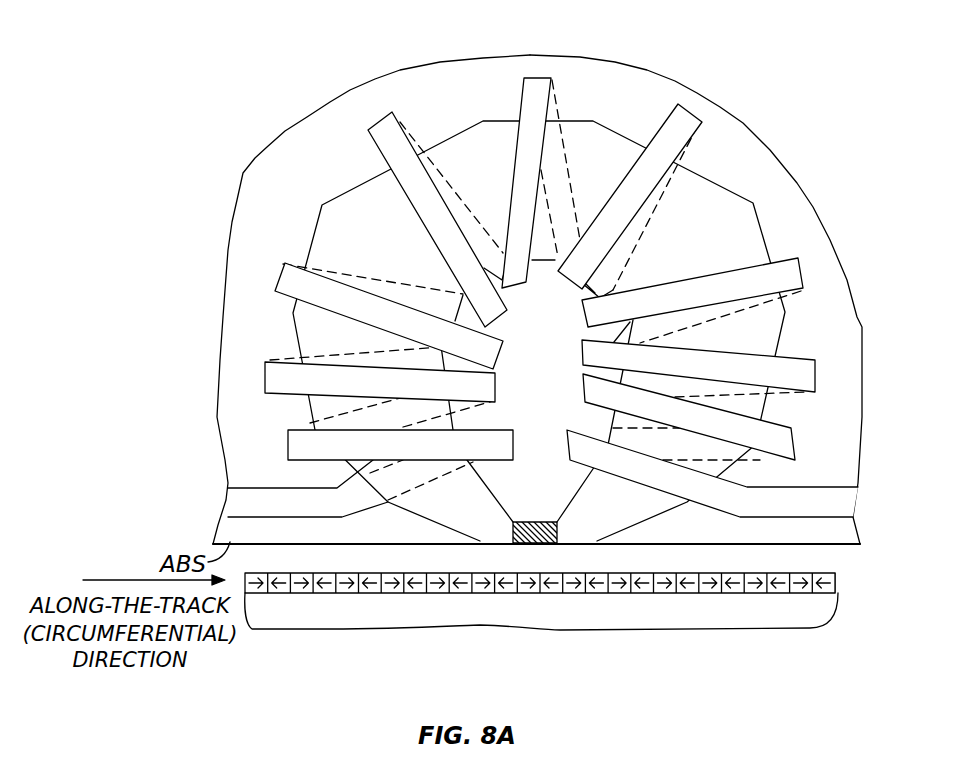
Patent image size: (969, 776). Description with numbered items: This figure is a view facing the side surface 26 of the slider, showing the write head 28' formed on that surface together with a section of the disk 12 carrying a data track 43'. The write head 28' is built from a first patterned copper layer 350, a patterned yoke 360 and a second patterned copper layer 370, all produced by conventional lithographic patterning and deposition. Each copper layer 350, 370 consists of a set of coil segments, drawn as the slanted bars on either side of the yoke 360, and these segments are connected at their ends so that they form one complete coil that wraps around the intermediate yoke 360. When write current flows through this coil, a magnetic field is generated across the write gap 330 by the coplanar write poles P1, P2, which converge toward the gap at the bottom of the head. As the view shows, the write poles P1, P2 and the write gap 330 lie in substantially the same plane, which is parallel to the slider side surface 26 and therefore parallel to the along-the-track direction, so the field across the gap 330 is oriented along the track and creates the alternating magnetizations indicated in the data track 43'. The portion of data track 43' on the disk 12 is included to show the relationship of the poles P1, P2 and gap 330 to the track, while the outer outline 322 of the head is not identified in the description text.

The write head 28' is at (550, 299).
The outer shield / head body outline 322 is at (280, 155).
The side surface 26 is at (820, 250).
The patterned yoke 360 is at (580, 123).
The second patterned copper layer 370 is at (390, 128).
The first patterned copper layer 350 is at (727, 270).
The write gap 330 is at (557, 523).
The write pole P1 is at (477, 495).
The write pole P2 is at (590, 495).
The data track 43' is at (576, 595).
The magnetic recording medium 12 is at (812, 620).